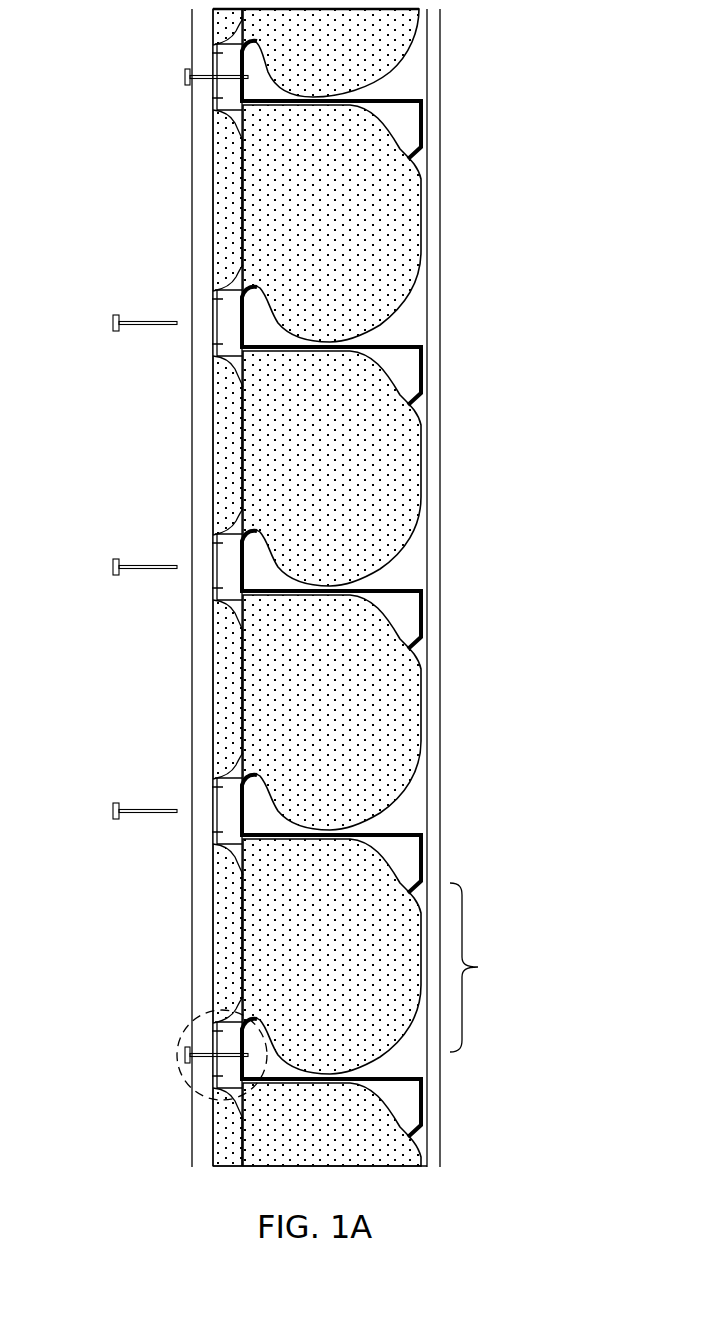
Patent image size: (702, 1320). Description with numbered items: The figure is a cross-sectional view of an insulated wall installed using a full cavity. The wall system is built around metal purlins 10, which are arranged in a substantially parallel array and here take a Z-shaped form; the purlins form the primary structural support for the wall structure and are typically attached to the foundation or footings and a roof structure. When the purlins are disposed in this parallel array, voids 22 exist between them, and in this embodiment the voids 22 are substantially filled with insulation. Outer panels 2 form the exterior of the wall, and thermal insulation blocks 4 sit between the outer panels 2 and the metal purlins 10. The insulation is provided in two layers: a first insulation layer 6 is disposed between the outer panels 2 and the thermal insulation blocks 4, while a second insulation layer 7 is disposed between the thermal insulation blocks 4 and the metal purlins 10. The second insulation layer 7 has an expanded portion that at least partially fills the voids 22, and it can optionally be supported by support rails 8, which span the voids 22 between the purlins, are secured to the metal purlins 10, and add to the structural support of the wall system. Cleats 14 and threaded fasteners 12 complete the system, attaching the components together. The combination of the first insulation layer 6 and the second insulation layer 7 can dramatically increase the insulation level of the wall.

The outer panels 2 is at (203, 905).
The thermal insulation blocks 4 is at (223, 567).
The first insulation layer 6 is at (213, 1152).
The second insulation layer 7 is at (265, 968).
The support rails 8 is at (425, 680).
The metal purlins 10 is at (423, 343).
The threaded fasteners 12 is at (113, 323).
The cleats 14 is at (215, 802).
The voids 22 is at (498, 967).